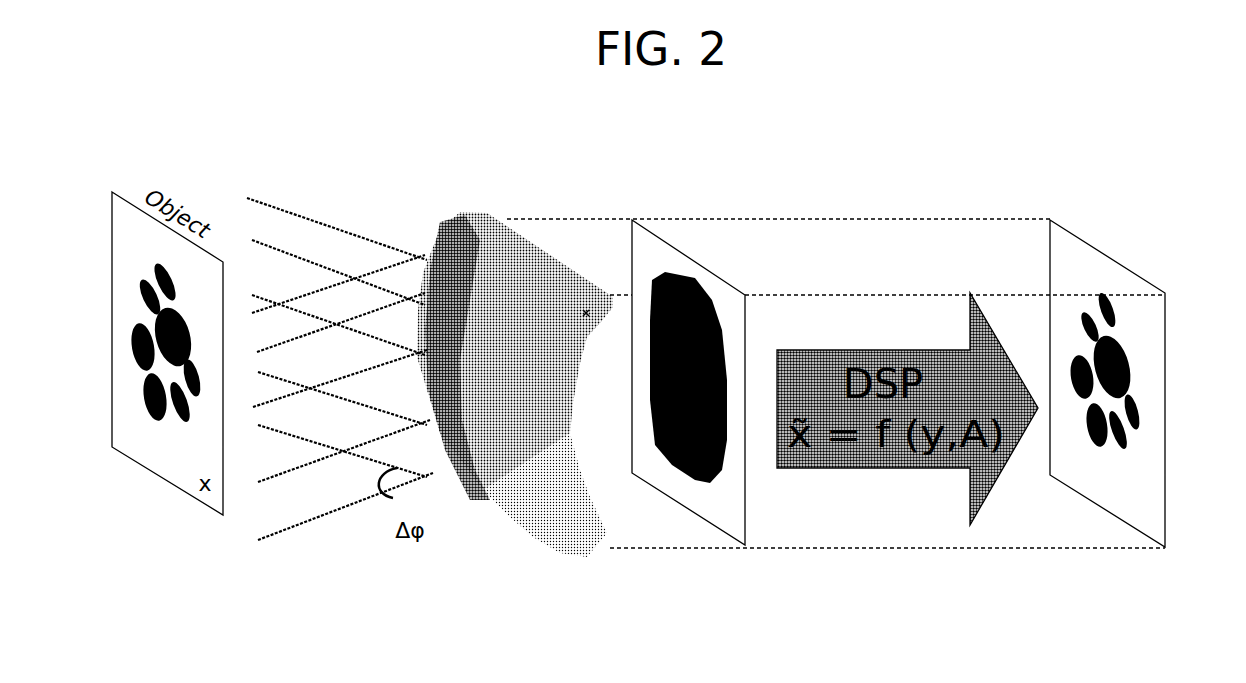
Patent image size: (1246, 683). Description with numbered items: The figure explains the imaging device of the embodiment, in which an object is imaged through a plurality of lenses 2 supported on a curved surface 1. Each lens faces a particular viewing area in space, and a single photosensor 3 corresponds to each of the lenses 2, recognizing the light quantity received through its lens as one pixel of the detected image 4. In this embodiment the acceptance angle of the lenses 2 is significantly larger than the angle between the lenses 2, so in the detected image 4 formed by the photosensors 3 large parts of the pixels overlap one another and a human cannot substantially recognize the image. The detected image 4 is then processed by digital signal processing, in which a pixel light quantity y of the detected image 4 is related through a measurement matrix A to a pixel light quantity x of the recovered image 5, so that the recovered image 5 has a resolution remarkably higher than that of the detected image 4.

The curved surface 1 is at (523, 273).
The lenses 2 is at (575, 550).
The photosensor 3 is at (586, 312).
The detected image 4 is at (745, 497).
The recovered image 5 is at (1165, 472).